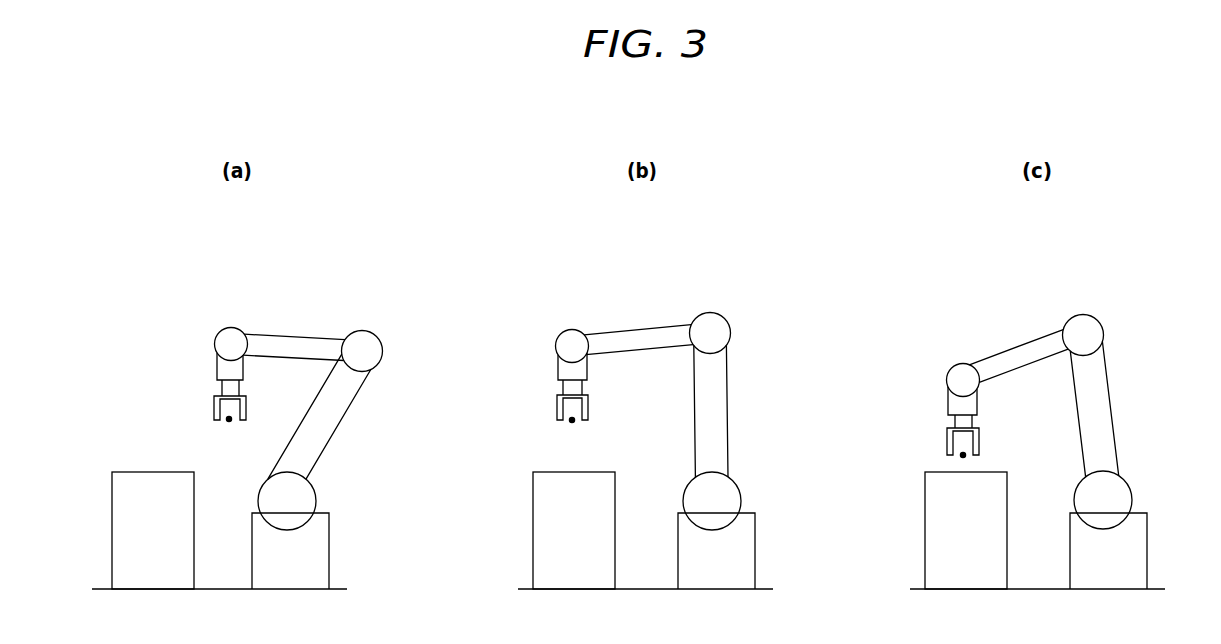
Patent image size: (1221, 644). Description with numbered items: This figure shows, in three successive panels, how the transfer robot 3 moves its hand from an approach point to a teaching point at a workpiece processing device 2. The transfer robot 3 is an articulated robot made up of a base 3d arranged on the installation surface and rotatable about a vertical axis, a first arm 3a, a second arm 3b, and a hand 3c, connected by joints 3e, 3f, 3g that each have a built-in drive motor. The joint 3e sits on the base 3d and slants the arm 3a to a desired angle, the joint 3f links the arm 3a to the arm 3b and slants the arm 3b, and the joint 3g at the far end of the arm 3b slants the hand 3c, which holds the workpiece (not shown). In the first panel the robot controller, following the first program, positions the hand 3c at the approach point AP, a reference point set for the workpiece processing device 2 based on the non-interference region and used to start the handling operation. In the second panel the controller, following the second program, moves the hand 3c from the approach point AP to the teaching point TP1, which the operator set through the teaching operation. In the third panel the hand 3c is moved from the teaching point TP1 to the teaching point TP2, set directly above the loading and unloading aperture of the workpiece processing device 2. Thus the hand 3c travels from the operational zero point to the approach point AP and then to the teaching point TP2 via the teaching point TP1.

The workpiece processing device 2 is at (112, 528).
The transfer robot 3 is at (169, 255).
The arm 3a is at (355, 385).
The arm 3b is at (310, 340).
The hand 3c is at (216, 407).
The base 3d is at (330, 553).
The joint 3e is at (305, 498).
The joint 3f is at (365, 343).
The joint 3g is at (224, 336).
The approach point AP is at (229, 419).
The teaching point TP1 is at (572, 420).
The teaching point TP2 is at (963, 455).